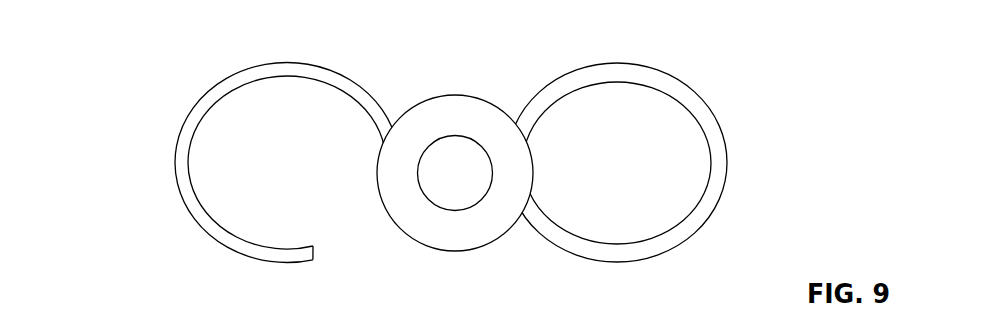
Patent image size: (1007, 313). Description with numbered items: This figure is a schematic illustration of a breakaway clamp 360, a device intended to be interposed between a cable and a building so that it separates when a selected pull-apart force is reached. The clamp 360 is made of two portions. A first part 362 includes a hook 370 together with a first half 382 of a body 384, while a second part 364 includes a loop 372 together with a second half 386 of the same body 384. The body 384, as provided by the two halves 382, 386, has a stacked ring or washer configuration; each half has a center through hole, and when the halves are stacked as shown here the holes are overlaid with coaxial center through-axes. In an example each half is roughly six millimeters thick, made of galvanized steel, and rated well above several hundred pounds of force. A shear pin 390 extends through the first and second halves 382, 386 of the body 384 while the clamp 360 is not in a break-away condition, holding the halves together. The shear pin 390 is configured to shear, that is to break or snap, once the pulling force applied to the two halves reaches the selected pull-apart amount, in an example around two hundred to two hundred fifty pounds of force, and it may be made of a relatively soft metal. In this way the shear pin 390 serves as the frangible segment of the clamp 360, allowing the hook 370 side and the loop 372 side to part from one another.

The breakaway clamp 360 is at (116, 27).
The first part 362 is at (167, 159).
The second part 364 is at (733, 85).
The hook 370 is at (190, 202).
The loop 372 is at (718, 166).
The first half 382 is at (377, 173).
The body 384 is at (374, 155).
The second half 386 is at (455, 173).
The shear pin 390 is at (472, 174).